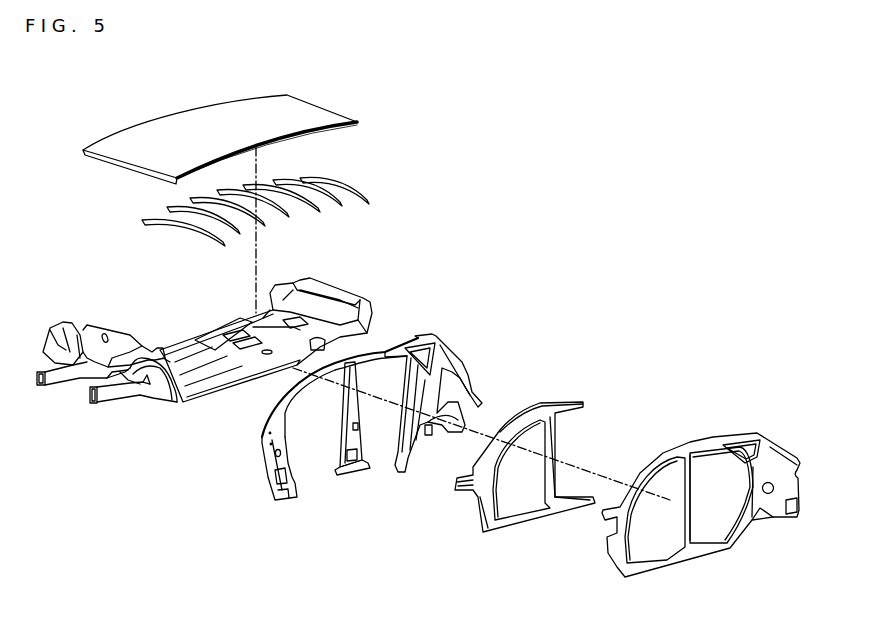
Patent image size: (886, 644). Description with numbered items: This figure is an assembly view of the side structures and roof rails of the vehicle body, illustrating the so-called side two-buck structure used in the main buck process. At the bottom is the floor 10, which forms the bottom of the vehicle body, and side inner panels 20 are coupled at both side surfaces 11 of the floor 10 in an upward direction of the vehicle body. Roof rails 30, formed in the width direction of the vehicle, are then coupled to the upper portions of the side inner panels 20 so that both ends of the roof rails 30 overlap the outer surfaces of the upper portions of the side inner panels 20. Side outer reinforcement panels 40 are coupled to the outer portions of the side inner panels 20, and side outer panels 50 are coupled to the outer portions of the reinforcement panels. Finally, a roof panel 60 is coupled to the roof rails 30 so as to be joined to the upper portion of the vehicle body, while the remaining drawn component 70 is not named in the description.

The floor 10 is at (152, 373).
The side surfaces 11 is at (233, 380).
The side inner panels 20 is at (337, 477).
The roof rails 30 is at (337, 185).
The side outer reinforcement panels 40 is at (572, 400).
The side outer panels 50 is at (710, 440).
The roof panel 60 is at (300, 115).
The rear quarter inner panel 70 is at (442, 348).